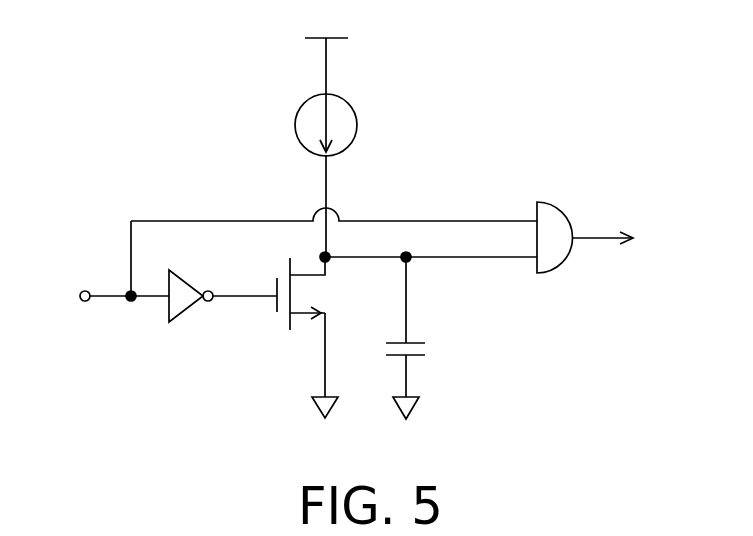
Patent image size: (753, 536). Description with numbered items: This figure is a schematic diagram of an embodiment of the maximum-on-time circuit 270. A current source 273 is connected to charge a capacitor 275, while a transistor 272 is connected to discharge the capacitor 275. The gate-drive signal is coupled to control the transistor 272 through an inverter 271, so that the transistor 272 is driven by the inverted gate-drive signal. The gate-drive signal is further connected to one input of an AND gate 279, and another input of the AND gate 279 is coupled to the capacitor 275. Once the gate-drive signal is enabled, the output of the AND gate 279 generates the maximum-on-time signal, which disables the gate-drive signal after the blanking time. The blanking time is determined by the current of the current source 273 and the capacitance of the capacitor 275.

The maximum-on-time circuit 270 is at (718, 145).
The inverter 271 is at (185, 310).
The transistor 272 is at (307, 332).
The current source 273 is at (357, 125).
The capacitor 275 is at (430, 338).
The AND gate 279 is at (562, 252).